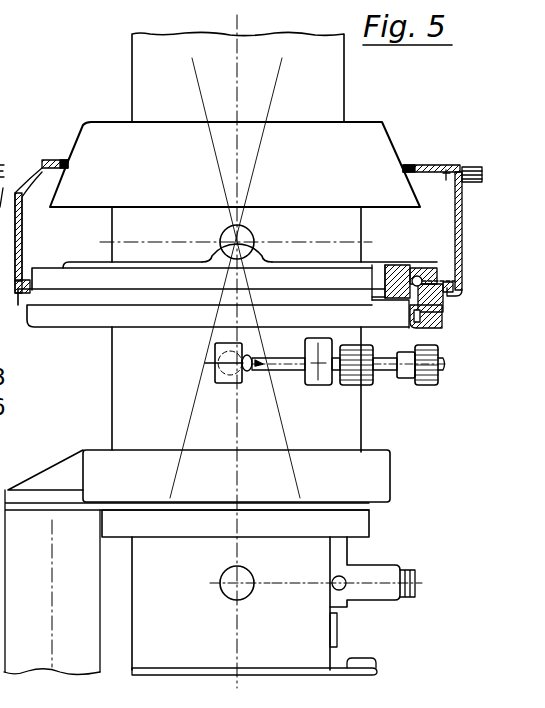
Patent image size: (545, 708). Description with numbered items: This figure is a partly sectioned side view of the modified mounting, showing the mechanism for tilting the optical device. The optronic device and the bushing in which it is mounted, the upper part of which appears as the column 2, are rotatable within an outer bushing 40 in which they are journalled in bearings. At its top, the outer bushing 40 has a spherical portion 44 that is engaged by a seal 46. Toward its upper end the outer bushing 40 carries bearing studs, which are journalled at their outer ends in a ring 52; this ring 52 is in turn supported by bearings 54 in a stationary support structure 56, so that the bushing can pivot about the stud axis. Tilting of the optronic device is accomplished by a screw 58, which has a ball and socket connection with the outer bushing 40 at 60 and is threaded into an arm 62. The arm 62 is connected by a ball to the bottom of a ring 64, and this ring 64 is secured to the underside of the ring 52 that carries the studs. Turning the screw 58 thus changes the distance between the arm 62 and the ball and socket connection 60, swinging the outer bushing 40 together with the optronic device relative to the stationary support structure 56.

The column 2 is at (332, 67).
The outer bushing 40 is at (132, 412).
The spherical portion 44 is at (374, 138).
The seal 46 is at (419, 163).
The ring 52 is at (410, 265).
The bearings 54 is at (444, 278).
The stationary support structure 56 is at (460, 222).
The screw 58 is at (283, 363).
The ball and socket connection 60 is at (225, 385).
The arm 62 is at (325, 380).
The ring 64 is at (422, 328).